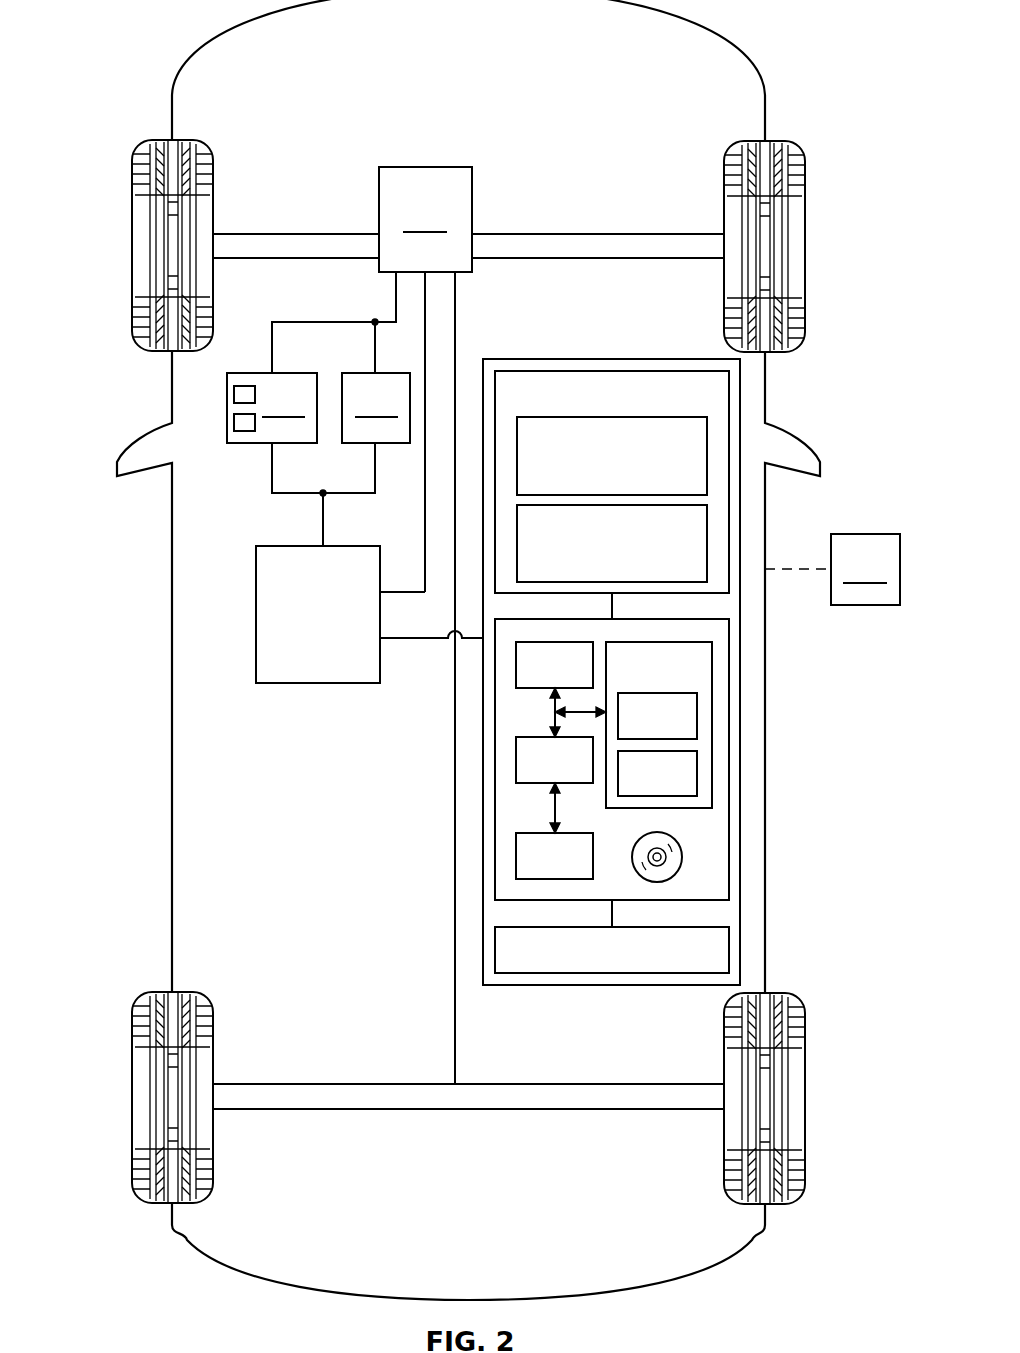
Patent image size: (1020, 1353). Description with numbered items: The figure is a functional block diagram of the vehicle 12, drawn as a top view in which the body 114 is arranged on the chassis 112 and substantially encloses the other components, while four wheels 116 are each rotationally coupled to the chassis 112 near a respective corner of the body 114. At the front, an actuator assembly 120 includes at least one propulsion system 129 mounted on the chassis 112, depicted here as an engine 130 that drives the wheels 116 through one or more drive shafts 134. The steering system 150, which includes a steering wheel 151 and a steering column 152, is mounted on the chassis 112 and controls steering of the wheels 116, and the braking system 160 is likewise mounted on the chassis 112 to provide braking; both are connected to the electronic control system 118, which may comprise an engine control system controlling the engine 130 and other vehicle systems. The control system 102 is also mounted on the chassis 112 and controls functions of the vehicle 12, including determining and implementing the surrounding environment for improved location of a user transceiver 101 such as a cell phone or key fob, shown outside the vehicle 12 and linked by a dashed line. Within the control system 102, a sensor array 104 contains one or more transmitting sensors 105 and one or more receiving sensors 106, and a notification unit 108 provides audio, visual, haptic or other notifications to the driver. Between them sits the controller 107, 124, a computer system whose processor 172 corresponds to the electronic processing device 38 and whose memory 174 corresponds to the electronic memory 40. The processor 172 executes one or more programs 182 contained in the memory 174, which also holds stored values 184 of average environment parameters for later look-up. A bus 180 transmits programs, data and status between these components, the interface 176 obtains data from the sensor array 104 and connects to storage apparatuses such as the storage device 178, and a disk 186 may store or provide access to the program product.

The vehicle 12 is at (170, 48).
The user transceiver 101 is at (832, 569).
The control system 102 is at (612, 358).
The sensor array 104 is at (730, 395).
The transmitting sensors 105 is at (708, 455).
The receiving sensors 106 is at (708, 545).
The controller 107 is at (730, 630).
The sensor module 124 is at (605, 773).
The notification unit 108 is at (730, 952).
The chassis 112 is at (451, 1040).
The body 114 is at (172, 727).
The wheels 116 is at (131, 247).
The electronic control system 118 is at (256, 613).
The actuator assembly 120 is at (465, 278).
The propulsion system 129 is at (416, 202).
The engine 130 is at (425, 167).
The drive shafts 134 is at (294, 234).
The steering system 150 is at (216, 428).
The steering wheel 151 is at (233, 395).
The steering column 152 is at (244, 432).
The braking system 160 is at (376, 408).
The processor 172 is at (516, 665).
The electronic processing device 38 is at (461, 688).
The memory 174 is at (713, 655).
The electronic memory 40 is at (736, 738).
The interface 176 is at (516, 762).
The storage device 178 is at (516, 855).
The bus 180 is at (552, 707).
The programs 182 is at (697, 716).
The stored values 184 is at (697, 773).
The disk 186 is at (683, 855).